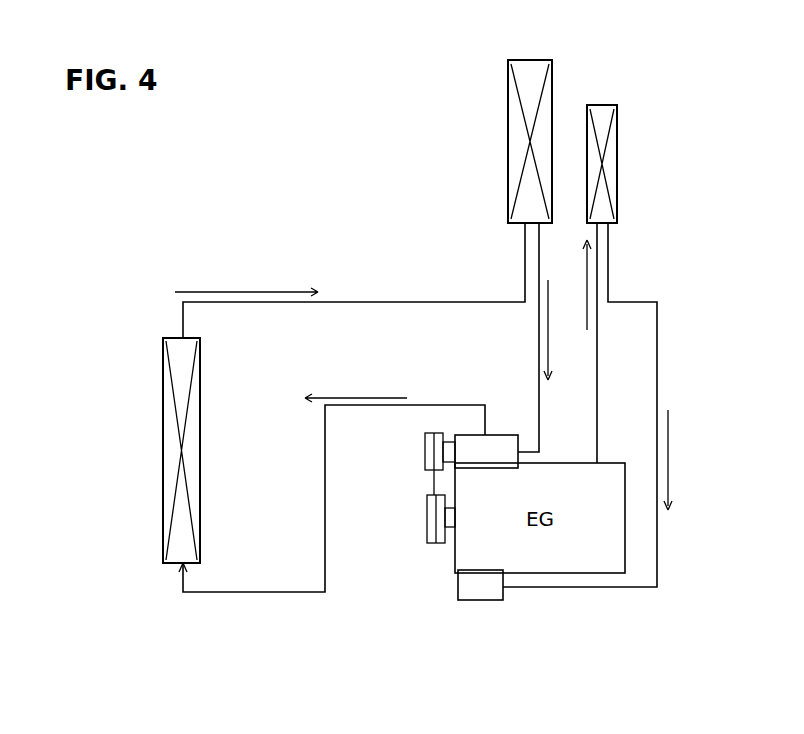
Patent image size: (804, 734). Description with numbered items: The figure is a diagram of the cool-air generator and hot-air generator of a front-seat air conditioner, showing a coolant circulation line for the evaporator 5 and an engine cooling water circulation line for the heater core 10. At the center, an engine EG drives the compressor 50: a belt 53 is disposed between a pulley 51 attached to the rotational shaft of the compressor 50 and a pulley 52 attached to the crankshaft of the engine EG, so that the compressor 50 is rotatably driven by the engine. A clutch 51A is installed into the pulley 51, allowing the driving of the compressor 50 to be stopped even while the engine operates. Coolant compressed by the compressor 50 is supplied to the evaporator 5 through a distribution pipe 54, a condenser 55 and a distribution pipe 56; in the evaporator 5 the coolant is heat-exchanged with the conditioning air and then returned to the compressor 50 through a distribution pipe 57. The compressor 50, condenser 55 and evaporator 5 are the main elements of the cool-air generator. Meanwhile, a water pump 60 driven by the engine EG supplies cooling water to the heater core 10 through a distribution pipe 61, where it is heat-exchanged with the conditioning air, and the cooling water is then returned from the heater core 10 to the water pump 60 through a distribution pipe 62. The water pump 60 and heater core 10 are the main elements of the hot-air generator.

The evaporator 5 is at (527, 65).
The heater core 10 is at (600, 108).
The compressor 50 is at (505, 442).
The pulley 51 is at (393, 466).
The clutch 51A is at (425, 450).
The pulley 52 is at (428, 522).
The belt 53 is at (434, 483).
The distribution pipe 54 is at (238, 593).
The condenser 55 is at (163, 446).
The distribution pipe 56 is at (396, 301).
The distribution pipe 57 is at (541, 421).
The water pump 60 is at (482, 592).
The distribution pipe 61 is at (598, 366).
The distribution pipe 62 is at (657, 546).